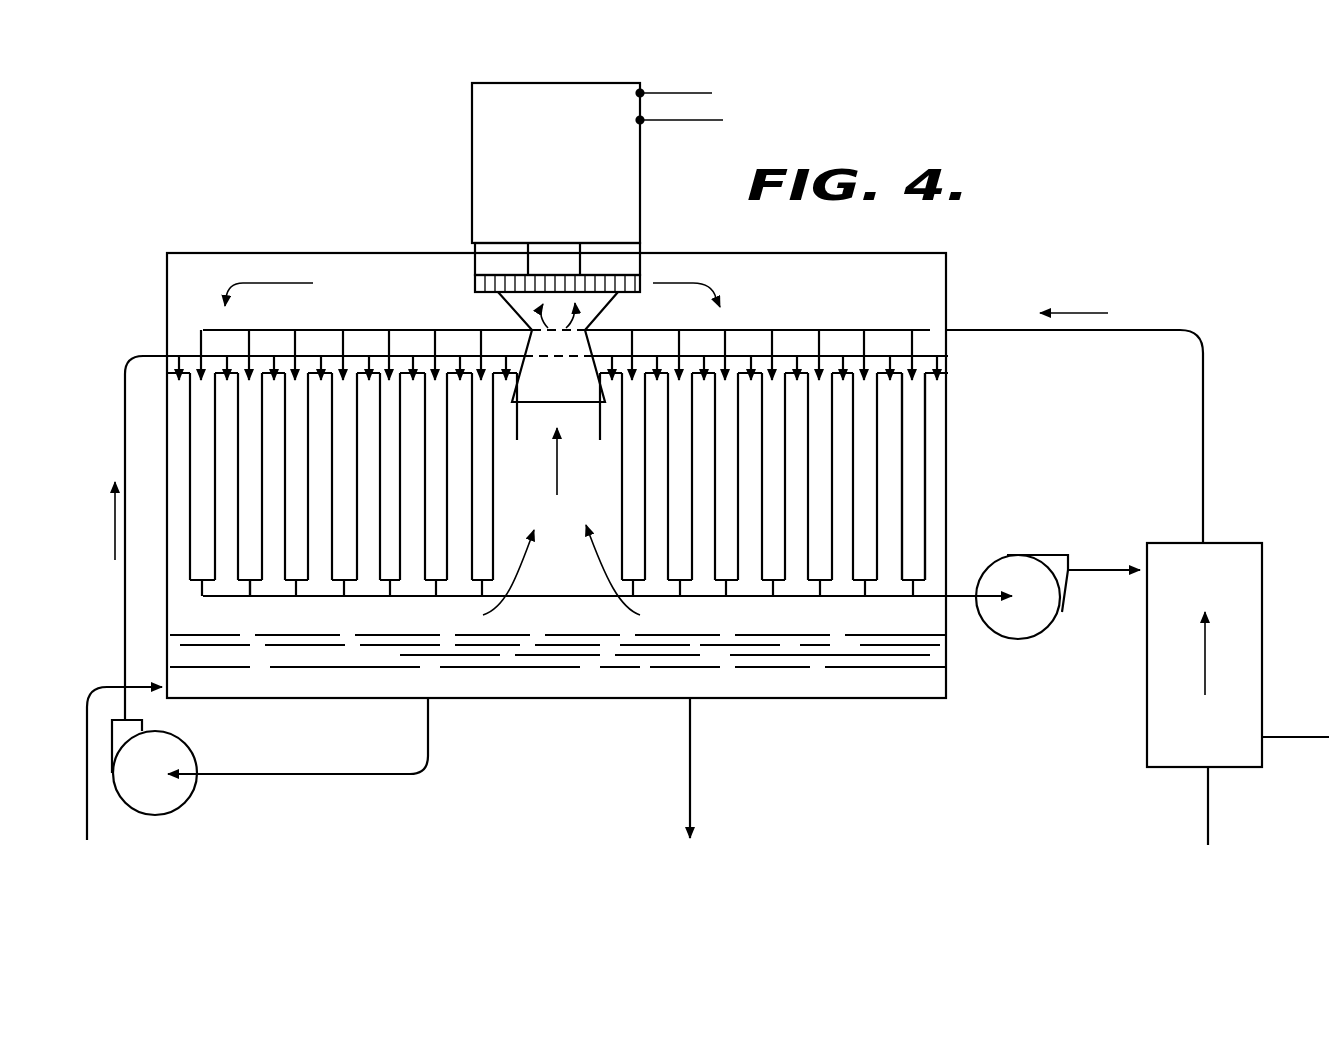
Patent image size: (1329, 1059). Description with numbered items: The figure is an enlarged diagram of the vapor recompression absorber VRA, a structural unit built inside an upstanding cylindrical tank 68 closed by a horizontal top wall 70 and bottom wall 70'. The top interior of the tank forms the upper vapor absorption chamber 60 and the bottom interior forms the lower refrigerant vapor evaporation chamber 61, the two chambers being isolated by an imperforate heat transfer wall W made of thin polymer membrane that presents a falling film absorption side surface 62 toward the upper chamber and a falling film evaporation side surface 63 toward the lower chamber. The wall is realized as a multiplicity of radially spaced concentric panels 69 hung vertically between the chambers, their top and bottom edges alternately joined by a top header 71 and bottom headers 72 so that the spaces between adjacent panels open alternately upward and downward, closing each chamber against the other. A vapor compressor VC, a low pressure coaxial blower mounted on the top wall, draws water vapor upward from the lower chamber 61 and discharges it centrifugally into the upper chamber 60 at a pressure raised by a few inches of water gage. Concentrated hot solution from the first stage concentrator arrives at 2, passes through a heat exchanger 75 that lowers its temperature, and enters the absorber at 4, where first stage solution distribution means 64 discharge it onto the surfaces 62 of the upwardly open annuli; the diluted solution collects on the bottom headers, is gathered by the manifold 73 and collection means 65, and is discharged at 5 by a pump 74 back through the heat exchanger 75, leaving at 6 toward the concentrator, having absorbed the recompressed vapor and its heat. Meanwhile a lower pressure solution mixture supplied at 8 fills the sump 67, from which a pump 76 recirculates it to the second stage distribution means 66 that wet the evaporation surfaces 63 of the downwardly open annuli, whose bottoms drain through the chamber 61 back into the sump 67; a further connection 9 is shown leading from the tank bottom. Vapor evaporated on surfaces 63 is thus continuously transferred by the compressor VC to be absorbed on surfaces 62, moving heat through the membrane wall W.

The top wall 70 is at (556, 449).
The bottom wall 70' is at (560, 727).
The vapor recompression absorber VRA is at (327, 210).
The vapor compressor VC is at (652, 243).
The upper vapor absorption chamber 60 is at (542, 294).
The top header 71 is at (362, 378).
The first stage solution distribution means 64 is at (203, 384).
The second stage solution distribution means 66 is at (178, 390).
The falling film absorption side surface 62 is at (289, 555).
The falling film evaporation side surface 63 is at (330, 562).
The heat transfer wall W is at (935, 479).
The solution collection means 65 is at (196, 592).
The bottom header 72 is at (244, 589).
The manifold 73 is at (710, 600).
The concentric panels 69 is at (467, 568).
The lower refrigerant vapor evaporation chamber 61 is at (557, 623).
The sump 67 is at (560, 672).
The cylindrical tank 68 is at (962, 672).
The incoming solution point 4 is at (1074, 415).
The first stage solution discharge point 5 is at (1007, 578).
The pump 74 is at (1032, 616).
The heat exchanger 75 is at (1172, 543).
The solution return point 6 is at (1295, 717).
The concentrated solution delivery point 2 is at (1206, 829).
The sump supply point 8 is at (118, 785).
The drain outlet 9 is at (688, 794).
The pump 76 is at (177, 800).